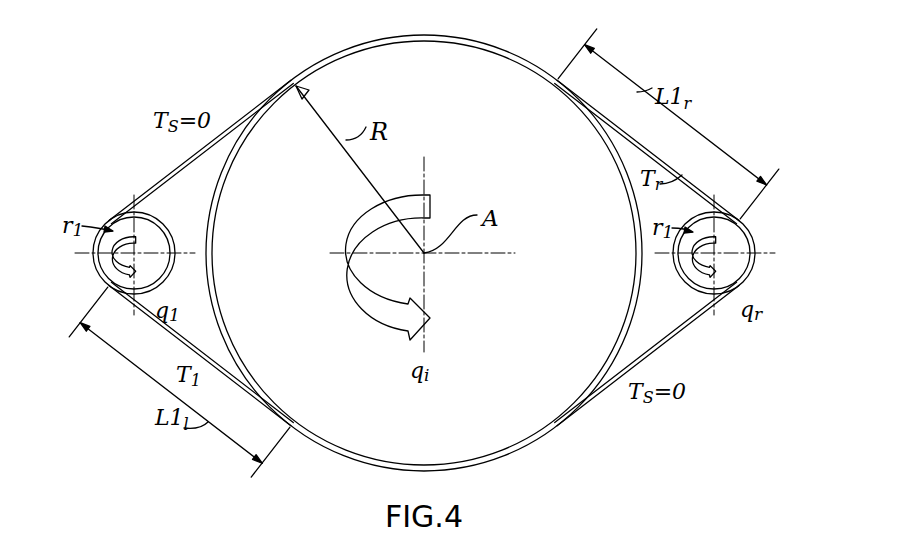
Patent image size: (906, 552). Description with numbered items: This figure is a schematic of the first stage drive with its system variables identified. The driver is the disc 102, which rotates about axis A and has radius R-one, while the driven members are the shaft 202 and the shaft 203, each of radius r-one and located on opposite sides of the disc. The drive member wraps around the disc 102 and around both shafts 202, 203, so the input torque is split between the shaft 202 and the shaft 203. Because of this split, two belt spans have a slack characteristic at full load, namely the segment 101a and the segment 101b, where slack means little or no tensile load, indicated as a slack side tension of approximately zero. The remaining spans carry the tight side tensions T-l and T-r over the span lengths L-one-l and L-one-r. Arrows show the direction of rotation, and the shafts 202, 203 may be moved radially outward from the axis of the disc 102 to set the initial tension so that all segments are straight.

The disc 102 is at (458, 72).
The belt segment 101a is at (667, 342).
The belt segment 101b is at (181, 167).
The shaft 202 is at (745, 232).
The shaft 203 is at (112, 275).